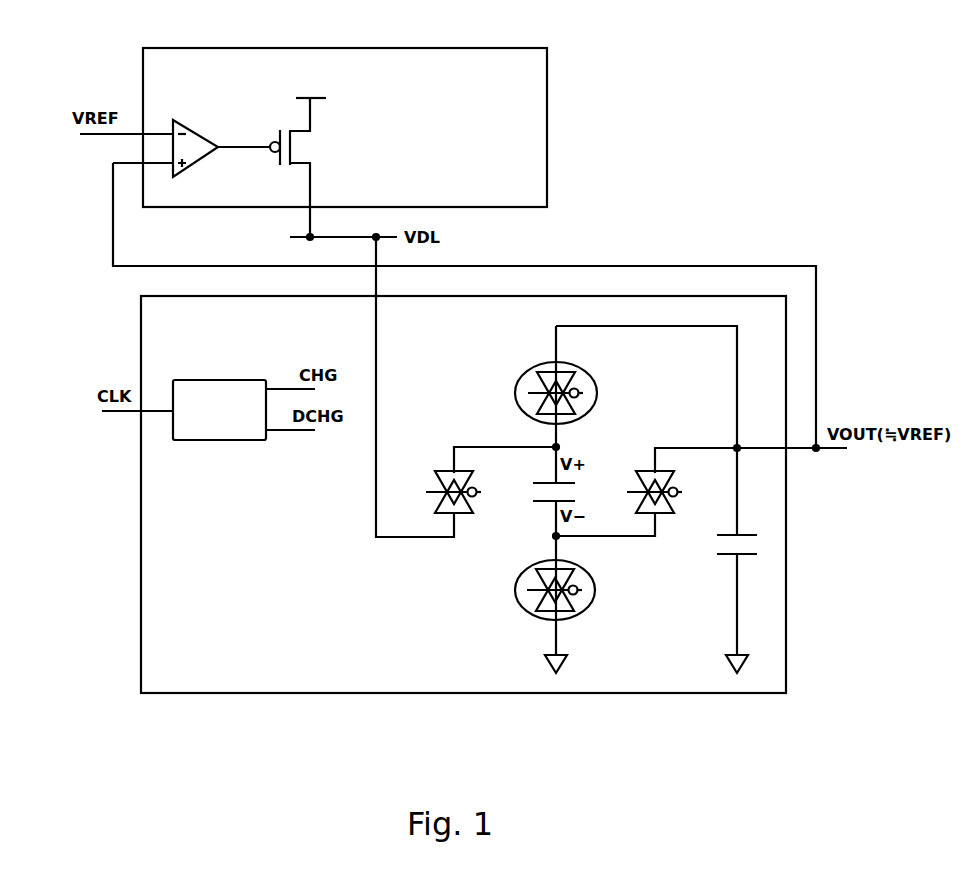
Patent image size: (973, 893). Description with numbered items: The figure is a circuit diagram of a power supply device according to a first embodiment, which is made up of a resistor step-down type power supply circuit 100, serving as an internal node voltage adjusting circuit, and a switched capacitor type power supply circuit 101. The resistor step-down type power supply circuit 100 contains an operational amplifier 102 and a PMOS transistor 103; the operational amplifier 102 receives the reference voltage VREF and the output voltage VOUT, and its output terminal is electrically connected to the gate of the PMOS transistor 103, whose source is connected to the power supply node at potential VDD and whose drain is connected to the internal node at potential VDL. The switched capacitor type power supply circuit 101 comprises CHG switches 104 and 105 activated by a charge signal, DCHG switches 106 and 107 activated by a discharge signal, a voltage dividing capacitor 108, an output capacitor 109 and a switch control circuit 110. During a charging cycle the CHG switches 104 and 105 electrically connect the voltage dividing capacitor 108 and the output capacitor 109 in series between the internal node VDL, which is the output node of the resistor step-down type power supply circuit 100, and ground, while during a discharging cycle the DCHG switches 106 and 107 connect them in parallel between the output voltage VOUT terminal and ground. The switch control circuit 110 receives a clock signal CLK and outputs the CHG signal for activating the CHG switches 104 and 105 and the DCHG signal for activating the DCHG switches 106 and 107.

The resistor step-down type power supply circuit 100 is at (547, 57).
The switched capacitor type power supply circuit 101 is at (650, 290).
The operational amplifier 102 is at (178, 119).
The PMOS transistor 103 is at (312, 147).
The CHG switch 104 is at (447, 473).
The CHG switch 105 is at (647, 473).
The DCHG switch 106 is at (548, 366).
The DCHG switch 107 is at (518, 605).
The voltage dividing capacitor 108 is at (528, 497).
The output capacitor 109 is at (760, 545).
The switch control circuit 110 is at (219, 442).